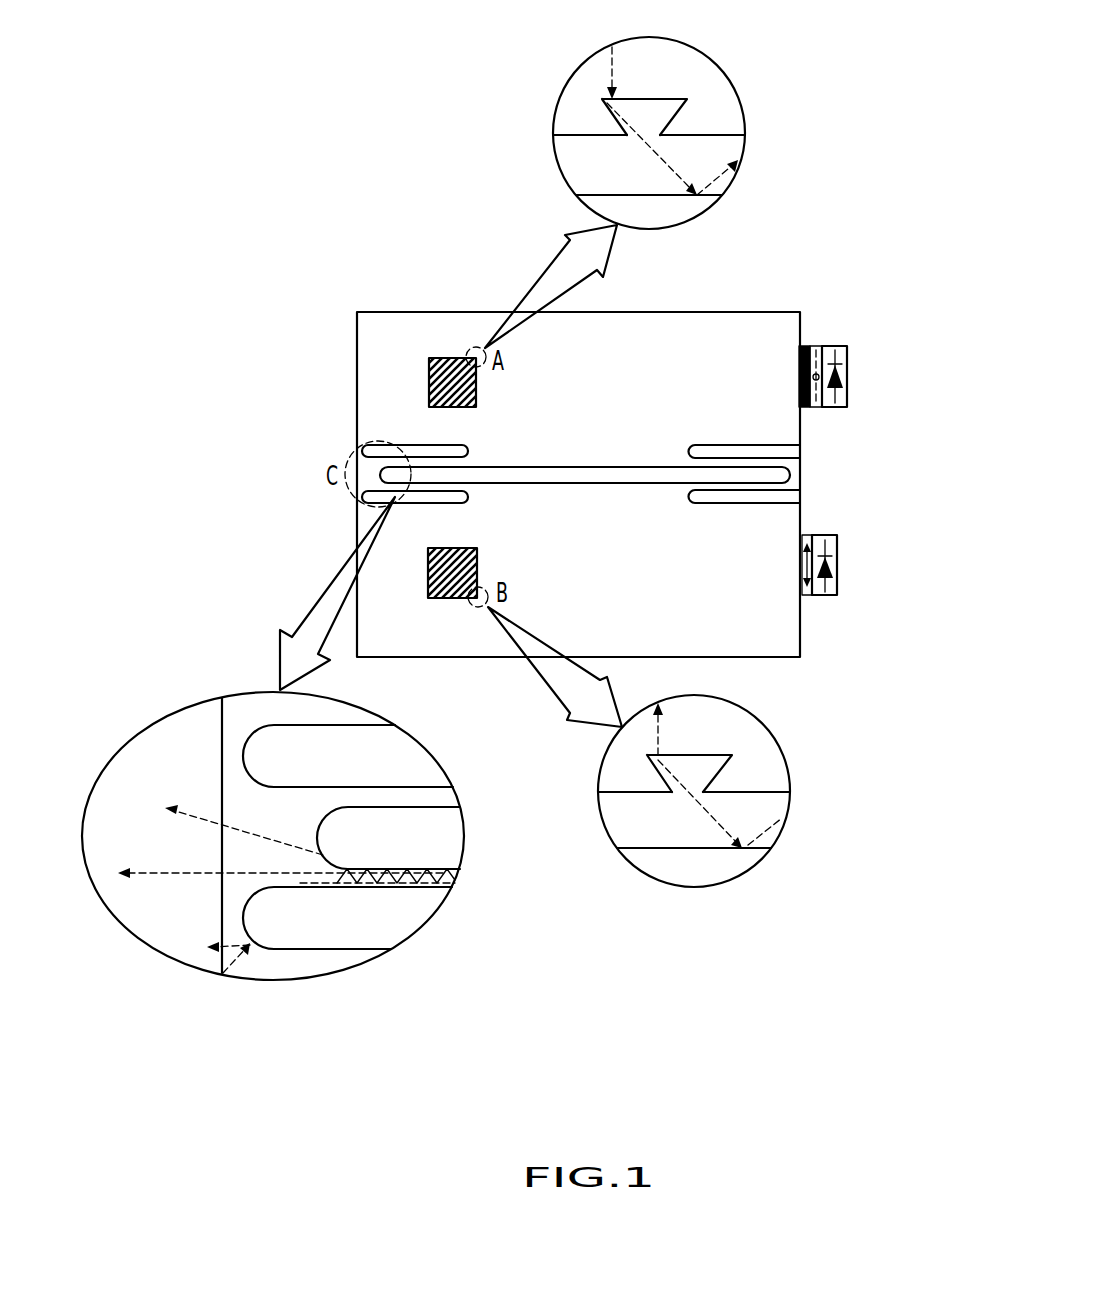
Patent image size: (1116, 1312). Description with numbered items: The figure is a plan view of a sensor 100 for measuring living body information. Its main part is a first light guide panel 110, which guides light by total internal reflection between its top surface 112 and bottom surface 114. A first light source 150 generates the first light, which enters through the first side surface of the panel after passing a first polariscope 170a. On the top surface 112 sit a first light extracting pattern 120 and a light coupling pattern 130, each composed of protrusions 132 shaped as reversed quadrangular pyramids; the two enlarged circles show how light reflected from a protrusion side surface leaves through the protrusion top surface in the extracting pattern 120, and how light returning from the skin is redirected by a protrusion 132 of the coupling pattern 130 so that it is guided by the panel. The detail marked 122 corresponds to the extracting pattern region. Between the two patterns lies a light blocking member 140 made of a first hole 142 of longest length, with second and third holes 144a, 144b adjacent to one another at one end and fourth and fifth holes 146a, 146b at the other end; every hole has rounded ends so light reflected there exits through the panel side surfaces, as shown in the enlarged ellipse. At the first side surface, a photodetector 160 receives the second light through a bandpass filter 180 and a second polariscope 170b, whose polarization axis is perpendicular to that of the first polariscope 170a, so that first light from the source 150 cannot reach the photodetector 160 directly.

The sensor 100 is at (688, 1034).
The first light guide panel 110 is at (720, 311).
The top surface 112 is at (782, 321).
The bottom surface 114 is at (612, 197).
The first light extracting pattern 120 is at (415, 577).
The second prism structure 122 is at (722, 753).
The light coupling pattern 130 is at (415, 387).
The protrusion 132 is at (677, 98).
The light blocking member 140 is at (796, 463).
The first hole 142 is at (800, 478).
The second hole 144a is at (362, 500).
The third hole 144b is at (362, 447).
The fourth hole 146a is at (800, 498).
The fifth hole 146b is at (800, 440).
The first light source 150 is at (837, 555).
The photodetector 160 is at (847, 373).
The first polariscope 170a is at (807, 595).
The second polariscope 170b is at (820, 345).
The bandpass filter 180 is at (807, 343).